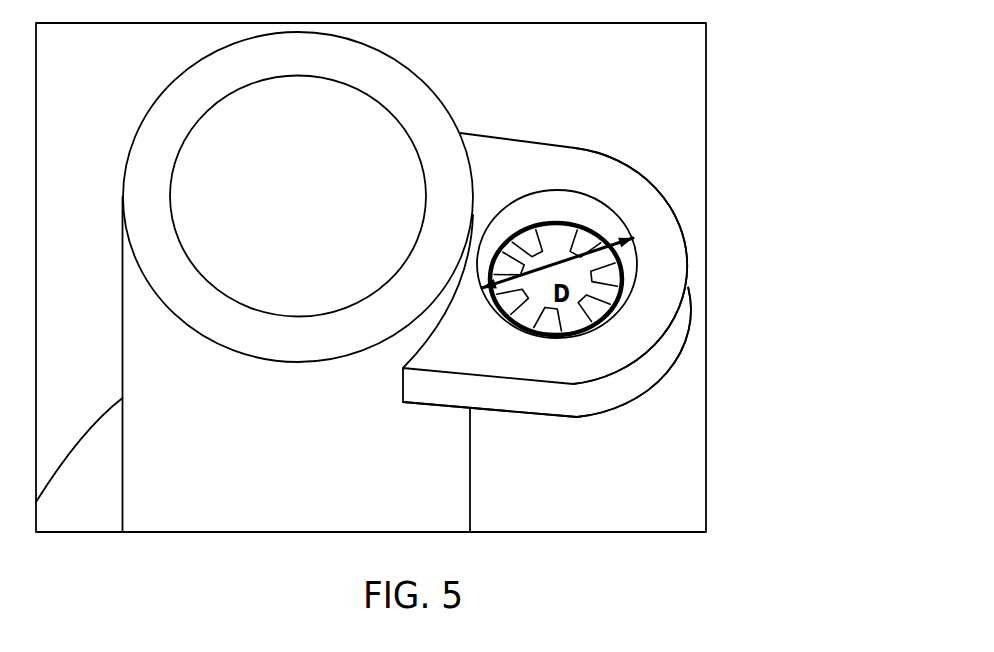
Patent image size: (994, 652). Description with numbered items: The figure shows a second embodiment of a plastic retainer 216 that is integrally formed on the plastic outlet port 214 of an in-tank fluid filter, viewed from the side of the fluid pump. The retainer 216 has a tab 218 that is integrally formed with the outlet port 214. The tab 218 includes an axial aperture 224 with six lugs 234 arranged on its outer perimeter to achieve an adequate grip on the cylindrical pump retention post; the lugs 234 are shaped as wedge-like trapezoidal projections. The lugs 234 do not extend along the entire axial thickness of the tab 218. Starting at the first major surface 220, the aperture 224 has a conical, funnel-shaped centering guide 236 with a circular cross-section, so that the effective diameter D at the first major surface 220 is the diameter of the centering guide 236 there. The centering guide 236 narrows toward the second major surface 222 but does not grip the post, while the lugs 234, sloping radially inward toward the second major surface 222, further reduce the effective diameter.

The plastic outlet port 214 is at (478, 104).
The plastic retainer 216 is at (588, 163).
The tab 218 is at (627, 190).
The first major surface 220 is at (480, 333).
The second major surface 222 is at (623, 400).
The axial aperture 224 is at (543, 223).
The lugs 234 is at (588, 224).
The centering guide 236 is at (627, 278).